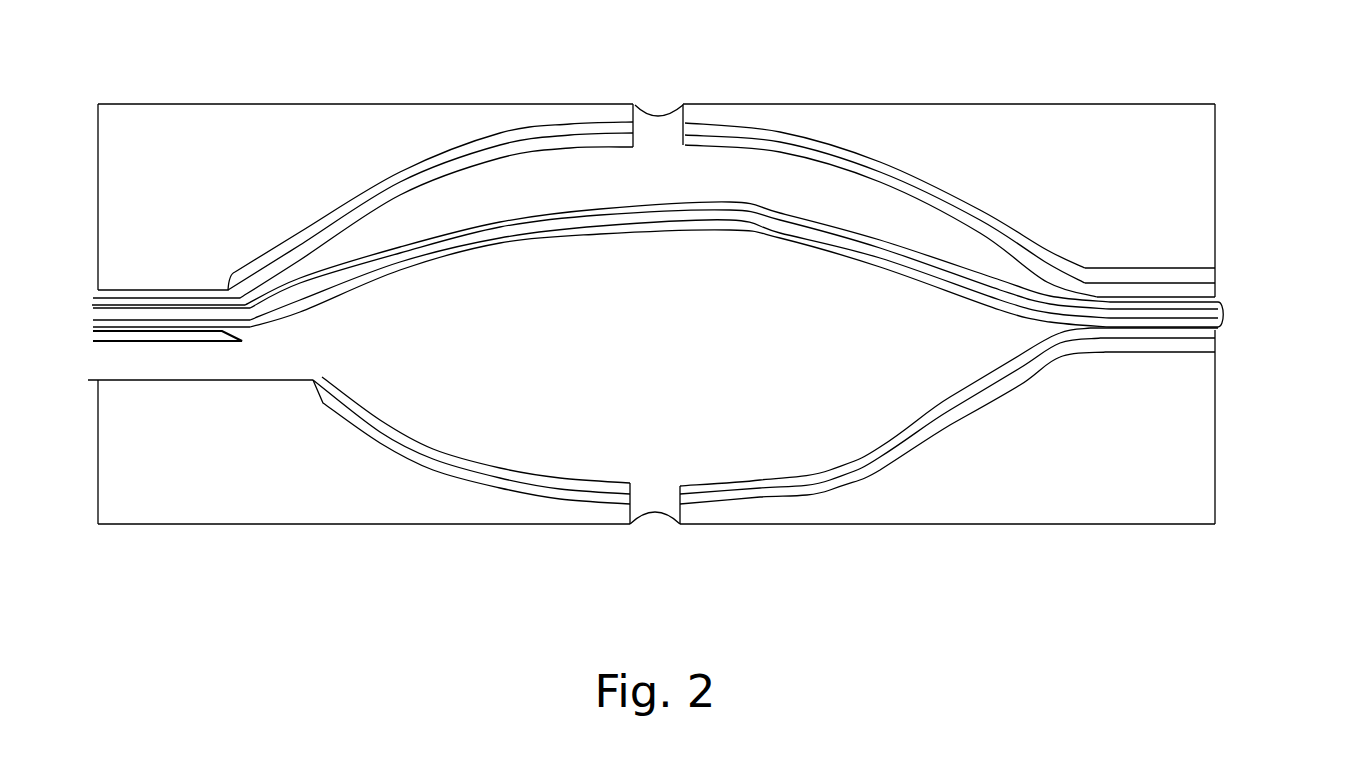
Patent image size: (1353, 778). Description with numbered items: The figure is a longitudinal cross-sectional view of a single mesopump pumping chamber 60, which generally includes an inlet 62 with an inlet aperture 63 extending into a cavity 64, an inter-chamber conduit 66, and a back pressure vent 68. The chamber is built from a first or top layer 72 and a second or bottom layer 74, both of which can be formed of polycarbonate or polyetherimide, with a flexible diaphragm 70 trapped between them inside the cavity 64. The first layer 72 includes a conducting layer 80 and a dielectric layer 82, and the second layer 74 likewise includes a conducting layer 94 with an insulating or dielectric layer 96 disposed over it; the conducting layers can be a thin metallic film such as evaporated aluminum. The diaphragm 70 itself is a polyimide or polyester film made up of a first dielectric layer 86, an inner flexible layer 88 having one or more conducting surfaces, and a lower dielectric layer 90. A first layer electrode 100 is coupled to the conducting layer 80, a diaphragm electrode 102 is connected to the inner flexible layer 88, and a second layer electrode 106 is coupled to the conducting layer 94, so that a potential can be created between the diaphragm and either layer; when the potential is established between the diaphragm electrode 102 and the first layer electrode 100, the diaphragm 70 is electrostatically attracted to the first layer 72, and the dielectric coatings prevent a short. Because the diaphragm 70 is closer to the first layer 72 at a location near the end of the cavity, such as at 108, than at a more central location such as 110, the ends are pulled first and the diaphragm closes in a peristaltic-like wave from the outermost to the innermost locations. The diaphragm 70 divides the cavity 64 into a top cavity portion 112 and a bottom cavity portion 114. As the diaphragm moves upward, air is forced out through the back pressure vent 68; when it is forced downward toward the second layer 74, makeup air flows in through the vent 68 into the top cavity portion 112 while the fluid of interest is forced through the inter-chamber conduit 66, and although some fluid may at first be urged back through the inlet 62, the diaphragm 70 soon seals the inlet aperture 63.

The pumping chamber 60 is at (748, 52).
The inlet 62 is at (118, 370).
The inlet aperture 63 is at (258, 360).
The cavity 64 is at (762, 438).
The inter-chamber conduit 66 is at (647, 523).
The back pressure vent 68 is at (658, 112).
The flexible diaphragm 70 is at (835, 200).
The first layer 72 is at (128, 168).
The second layer 74 is at (130, 437).
The conducting layer 80 is at (598, 128).
The dielectric layer 82 is at (530, 148).
The first dielectric layer 86 is at (465, 233).
The inner flexible layer 88 is at (518, 235).
The lower dielectric layer 90 is at (495, 248).
The conducting layer 94 is at (418, 457).
The dielectric layer 96 is at (495, 471).
The first layer electrode 100 is at (1178, 280).
The diaphragm electrode 102 is at (1222, 313).
The second layer electrode 106 is at (1193, 343).
The location near end of pumping cavity 108 is at (335, 257).
The location centered in pumping cavity 110 is at (452, 203).
The top cavity portion 112 is at (950, 243).
The bottom cavity portion 114 is at (895, 388).